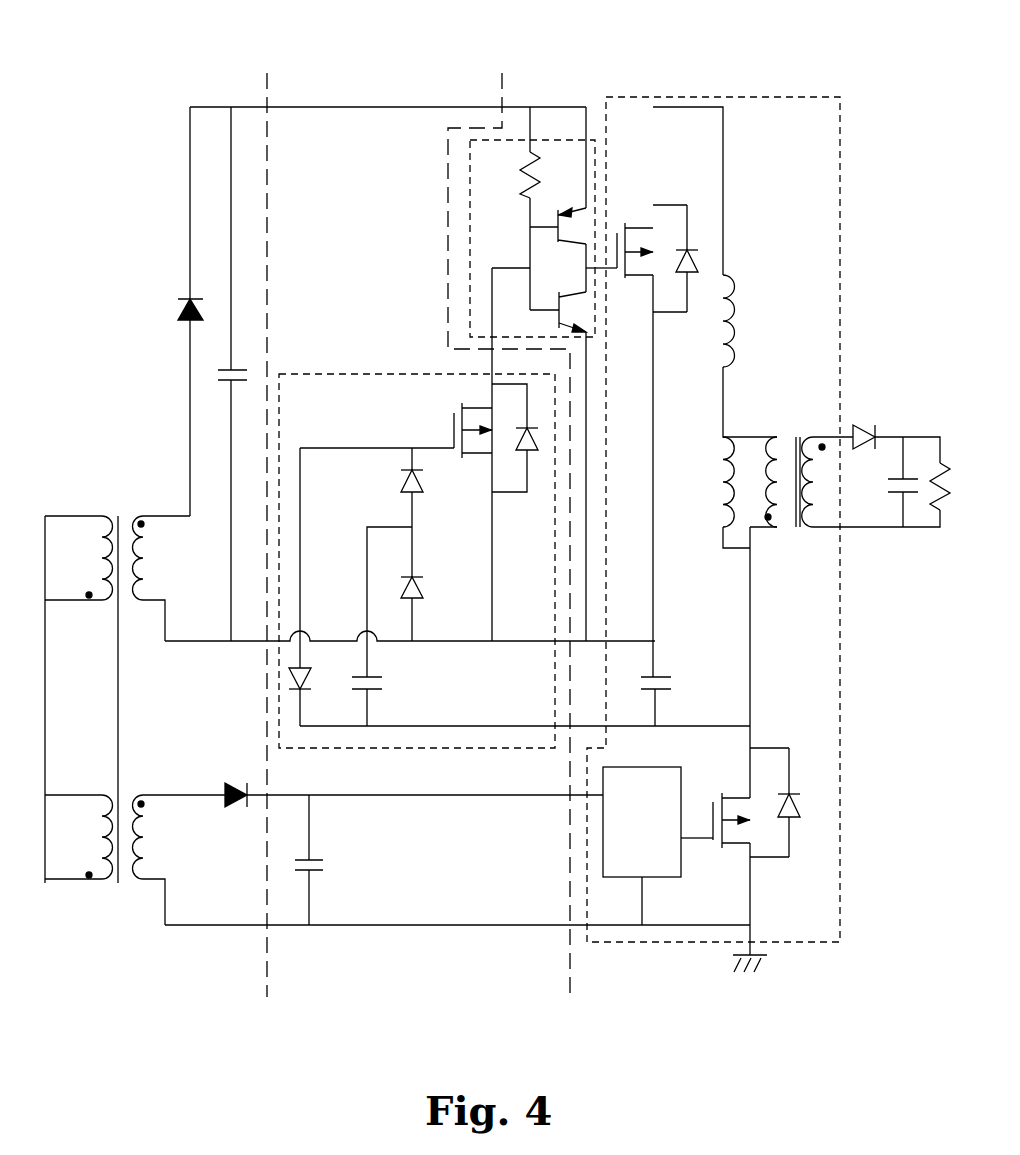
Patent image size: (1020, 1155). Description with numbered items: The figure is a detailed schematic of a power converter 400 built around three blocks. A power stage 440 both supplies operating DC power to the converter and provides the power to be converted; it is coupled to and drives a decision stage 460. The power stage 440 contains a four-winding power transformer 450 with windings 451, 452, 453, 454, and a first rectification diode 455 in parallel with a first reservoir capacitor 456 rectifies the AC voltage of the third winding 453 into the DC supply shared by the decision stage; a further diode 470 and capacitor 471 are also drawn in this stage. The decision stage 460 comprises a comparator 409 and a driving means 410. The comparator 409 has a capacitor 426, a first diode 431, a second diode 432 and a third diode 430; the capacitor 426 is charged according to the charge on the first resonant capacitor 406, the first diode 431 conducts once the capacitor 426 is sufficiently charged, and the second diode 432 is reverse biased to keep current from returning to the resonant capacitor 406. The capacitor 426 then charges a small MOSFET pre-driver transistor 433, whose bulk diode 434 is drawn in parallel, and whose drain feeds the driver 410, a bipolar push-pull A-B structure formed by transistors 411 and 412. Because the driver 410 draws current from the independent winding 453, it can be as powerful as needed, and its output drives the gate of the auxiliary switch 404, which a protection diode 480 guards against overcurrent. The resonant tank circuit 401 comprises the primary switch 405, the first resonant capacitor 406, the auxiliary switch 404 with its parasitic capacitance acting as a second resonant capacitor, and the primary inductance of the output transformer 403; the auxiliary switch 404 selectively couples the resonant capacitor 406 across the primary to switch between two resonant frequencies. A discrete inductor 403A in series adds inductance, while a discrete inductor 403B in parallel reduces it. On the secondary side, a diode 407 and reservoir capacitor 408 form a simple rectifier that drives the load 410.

The power converter 400 is at (812, 50).
The resonant tank circuit 401 is at (841, 232).
The output transformer 403 is at (750, 403).
The discrete inductor 403A is at (740, 325).
The discrete inductor 403B is at (720, 482).
The auxiliary switch 404 is at (638, 215).
The primary switch 405 is at (740, 855).
The first resonant capacitor 406 is at (672, 683).
The diode 407 is at (868, 425).
The reservoir capacitor 408 is at (885, 497).
The comparator 409 is at (345, 372).
The driving means 410 is at (548, 140).
The transistor Q3 411 is at (570, 210).
The transistor Q4 412 is at (568, 293).
The capacitor 426 is at (385, 683).
The third diode 430 is at (312, 680).
The first diode D1 431 is at (392, 485).
The second diode D2 432 is at (428, 588).
The transistor Q5 433 is at (450, 425).
The bulk diode 434 is at (540, 455).
The power stage 440 is at (178, 988).
The power transformer 450 is at (135, 691).
The winding of power transformer 451 is at (79, 558).
The winding of power transformer 452 is at (79, 837).
The third winding 453 is at (162, 578).
The winding of power transformer 454 is at (179, 860).
The first rectification diode 455 is at (176, 311).
The first reservoir capacitor 456 is at (190, 373).
The decision stage 460 is at (406, 988).
The diode 470 is at (237, 812).
The capacitor 471 is at (325, 868).
The protection diode 480 is at (695, 275).